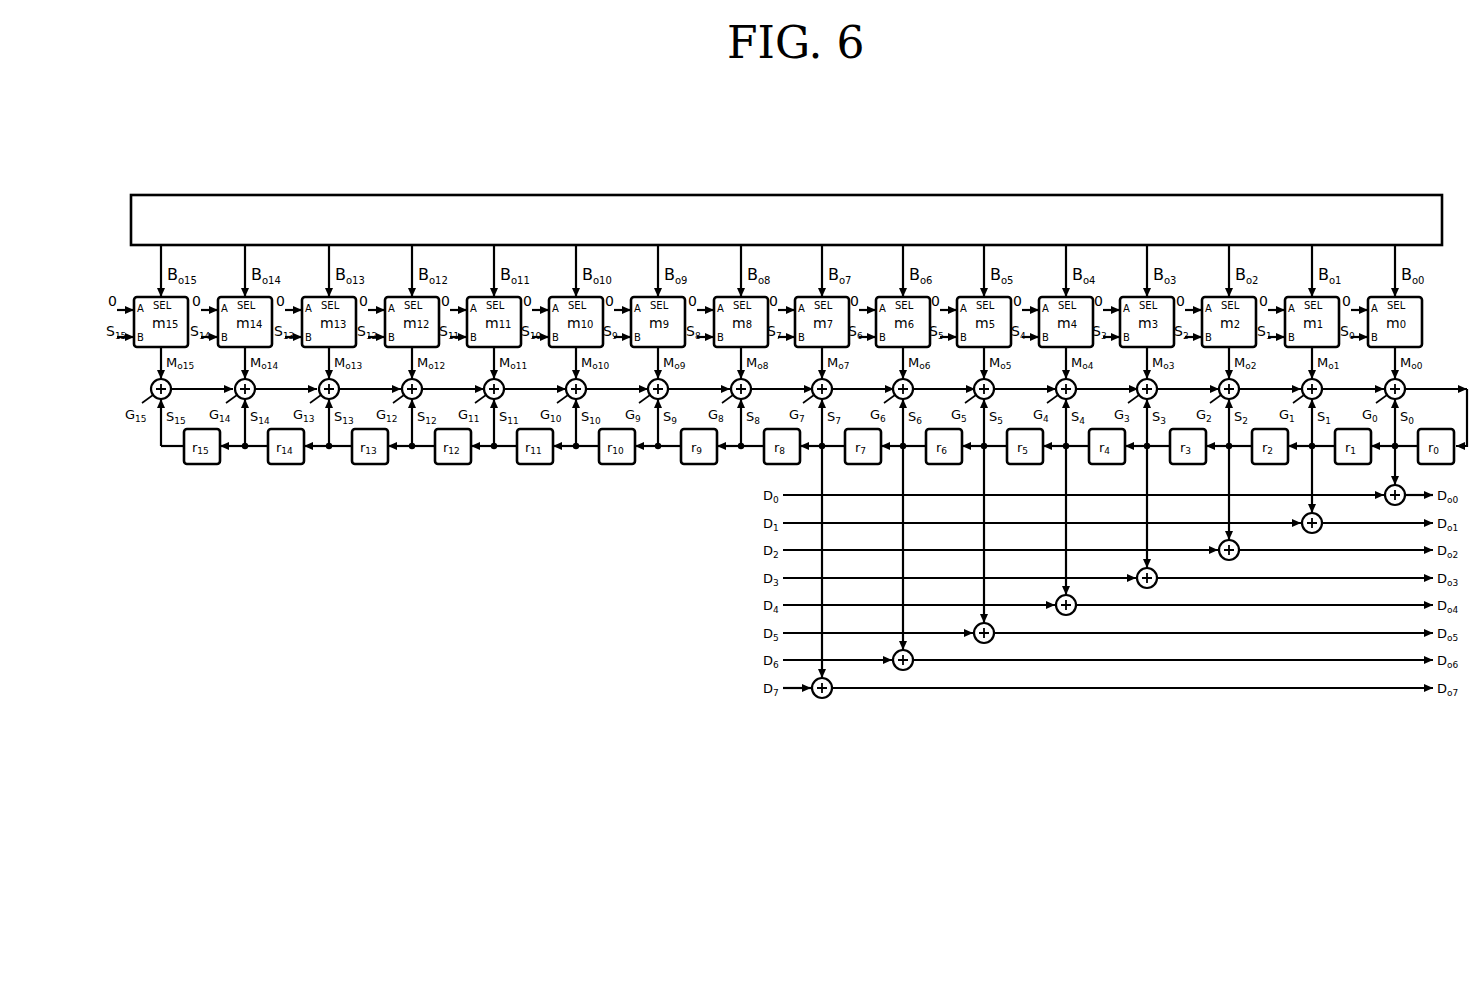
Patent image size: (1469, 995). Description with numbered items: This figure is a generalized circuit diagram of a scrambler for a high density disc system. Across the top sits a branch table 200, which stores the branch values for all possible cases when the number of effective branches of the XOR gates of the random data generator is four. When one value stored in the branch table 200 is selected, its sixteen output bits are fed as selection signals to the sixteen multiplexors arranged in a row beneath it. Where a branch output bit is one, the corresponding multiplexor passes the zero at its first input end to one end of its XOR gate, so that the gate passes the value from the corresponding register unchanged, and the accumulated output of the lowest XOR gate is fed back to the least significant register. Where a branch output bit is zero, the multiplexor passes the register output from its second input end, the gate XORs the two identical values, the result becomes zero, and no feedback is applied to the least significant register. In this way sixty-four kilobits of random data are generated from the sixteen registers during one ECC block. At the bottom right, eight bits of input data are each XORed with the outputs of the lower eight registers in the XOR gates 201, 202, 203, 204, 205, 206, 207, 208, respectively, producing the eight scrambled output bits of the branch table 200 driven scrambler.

The branch table 200 is at (1010, 196).
The XOR gate 201 is at (1402, 488).
The XOR gate 202 is at (1319, 516).
The XOR gate 203 is at (1236, 543).
The XOR gate 204 is at (1154, 571).
The XOR gate 205 is at (1073, 598).
The XOR gate 206 is at (991, 626).
The XOR gate 207 is at (910, 653).
The XOR gate 208 is at (829, 681).